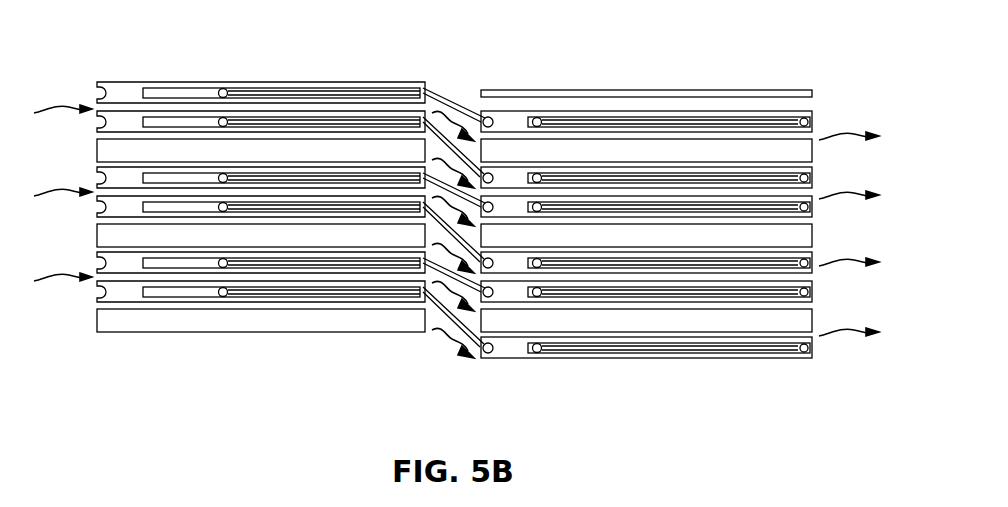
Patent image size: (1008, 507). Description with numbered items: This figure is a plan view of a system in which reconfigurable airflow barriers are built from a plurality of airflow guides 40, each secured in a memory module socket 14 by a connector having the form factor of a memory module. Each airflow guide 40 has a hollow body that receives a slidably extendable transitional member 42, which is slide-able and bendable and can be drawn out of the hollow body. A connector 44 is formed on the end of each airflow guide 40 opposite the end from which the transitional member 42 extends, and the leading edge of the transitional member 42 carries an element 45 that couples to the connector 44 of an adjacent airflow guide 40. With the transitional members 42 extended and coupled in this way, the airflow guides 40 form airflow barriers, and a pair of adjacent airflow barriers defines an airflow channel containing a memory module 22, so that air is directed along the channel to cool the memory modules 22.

The memory module socket 14 is at (700, 89).
The memory module 22 is at (638, 329).
The airflow guide 40 is at (376, 111).
The slidably extendable transitional member 42 is at (469, 134).
The connector 44 is at (482, 120).
The element 45 is at (487, 117).